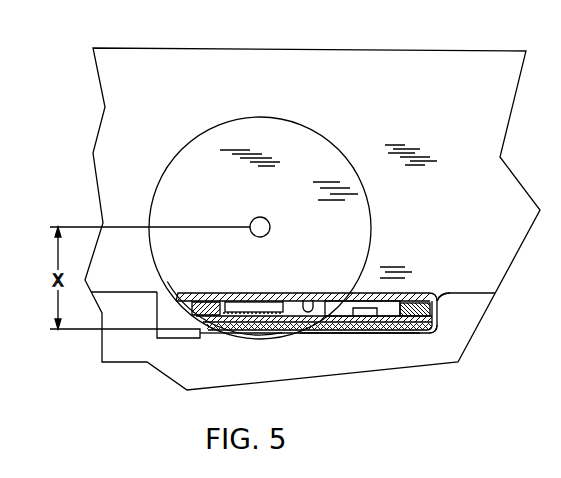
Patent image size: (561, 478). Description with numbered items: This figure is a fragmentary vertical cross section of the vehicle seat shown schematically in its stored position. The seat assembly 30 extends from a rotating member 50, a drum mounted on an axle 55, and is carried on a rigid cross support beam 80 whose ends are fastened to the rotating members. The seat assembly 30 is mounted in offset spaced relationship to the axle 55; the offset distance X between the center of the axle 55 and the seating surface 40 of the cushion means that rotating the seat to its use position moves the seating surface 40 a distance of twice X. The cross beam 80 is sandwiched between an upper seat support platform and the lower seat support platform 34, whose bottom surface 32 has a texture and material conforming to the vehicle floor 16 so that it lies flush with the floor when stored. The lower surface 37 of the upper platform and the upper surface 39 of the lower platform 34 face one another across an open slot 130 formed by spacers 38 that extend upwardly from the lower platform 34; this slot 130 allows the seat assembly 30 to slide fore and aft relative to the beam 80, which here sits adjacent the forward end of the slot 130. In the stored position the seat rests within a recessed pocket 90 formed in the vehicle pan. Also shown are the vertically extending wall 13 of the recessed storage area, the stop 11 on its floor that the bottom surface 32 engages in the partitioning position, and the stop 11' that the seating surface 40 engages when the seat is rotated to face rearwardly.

The stop 11 is at (229, 375).
The stop 11' is at (360, 375).
The wall 13 is at (168, 321).
The vehicle floor 16 is at (146, 290).
The seat assembly 30 is at (352, 305).
The bottom surface 32 is at (364, 293).
The lower seat support platform 34 is at (447, 290).
The lower surface of upper platform 37 is at (308, 336).
The spacers 38 is at (440, 313).
The upper surface of lower platform 39 is at (305, 298).
The seating surface 40 is at (390, 331).
The rotating member 50 is at (303, 126).
The axle 55 is at (254, 220).
The cross support beam 80 is at (261, 292).
The recessed pocket 90 is at (428, 332).
The open slot 130 is at (329, 304).